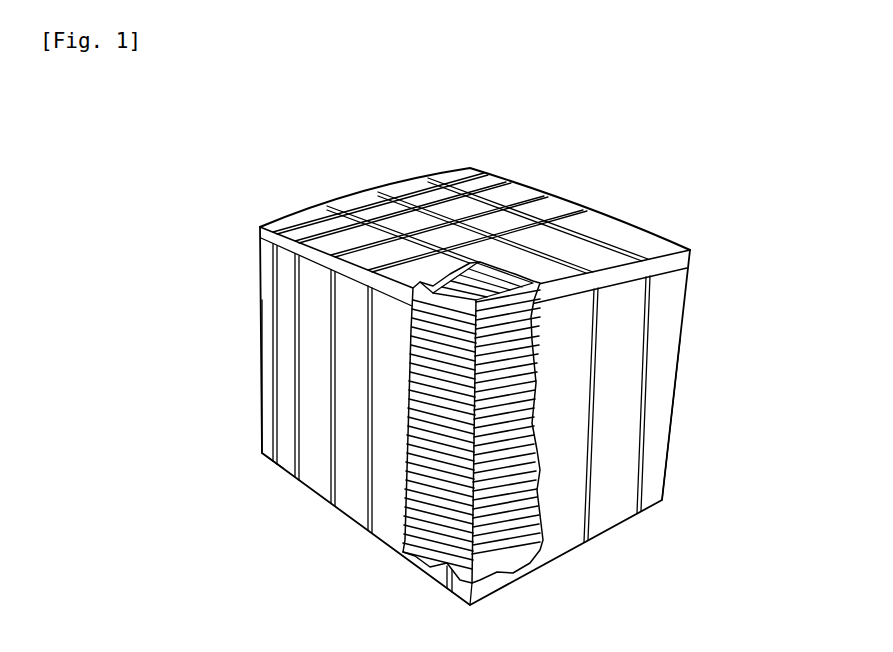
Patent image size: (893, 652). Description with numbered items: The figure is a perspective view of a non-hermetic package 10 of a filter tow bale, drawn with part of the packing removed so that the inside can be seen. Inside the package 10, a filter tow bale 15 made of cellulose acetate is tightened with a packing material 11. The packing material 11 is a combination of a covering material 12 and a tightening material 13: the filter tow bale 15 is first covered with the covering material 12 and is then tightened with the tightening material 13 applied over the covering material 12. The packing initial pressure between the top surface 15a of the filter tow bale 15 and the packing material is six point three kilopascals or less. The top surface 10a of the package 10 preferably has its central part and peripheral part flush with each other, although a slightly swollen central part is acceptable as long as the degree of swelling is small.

The package 10 is at (499, 363).
The top surface of the package 10a is at (597, 222).
The packing material 11 is at (499, 377).
The covering material 12 is at (288, 322).
The tightening material 13 is at (292, 228).
The filter tow bale 15 is at (497, 363).
The top surface of the filter tow bale 15a is at (466, 263).